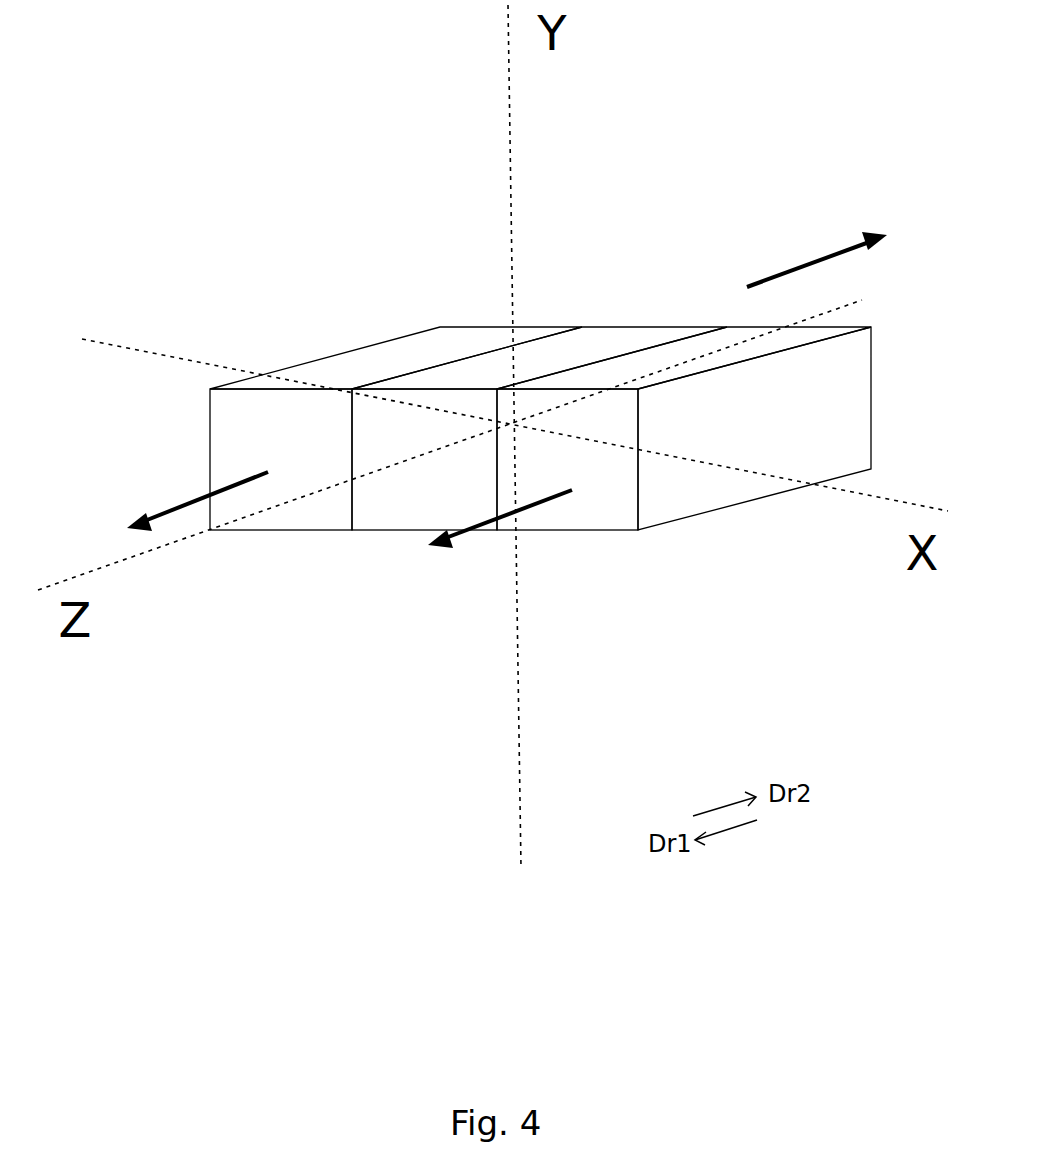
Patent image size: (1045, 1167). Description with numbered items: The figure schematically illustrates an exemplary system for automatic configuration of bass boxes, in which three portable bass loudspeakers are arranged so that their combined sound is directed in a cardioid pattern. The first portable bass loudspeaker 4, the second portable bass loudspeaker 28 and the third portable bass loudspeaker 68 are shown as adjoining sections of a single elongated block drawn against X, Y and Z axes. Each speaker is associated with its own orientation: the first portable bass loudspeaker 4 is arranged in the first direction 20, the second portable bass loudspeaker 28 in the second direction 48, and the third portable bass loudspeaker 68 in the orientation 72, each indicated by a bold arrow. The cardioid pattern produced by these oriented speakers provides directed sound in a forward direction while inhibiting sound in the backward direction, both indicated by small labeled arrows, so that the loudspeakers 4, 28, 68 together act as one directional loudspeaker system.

The first portable bass loudspeaker 4 is at (354, 356).
The second portable bass loudspeaker 28 is at (534, 356).
The third portable bass loudspeaker 68 is at (701, 406).
The second direction 48 is at (817, 256).
The first direction 20 is at (197, 499).
The orientation of third portable bass loudspeaker 72 is at (500, 531).